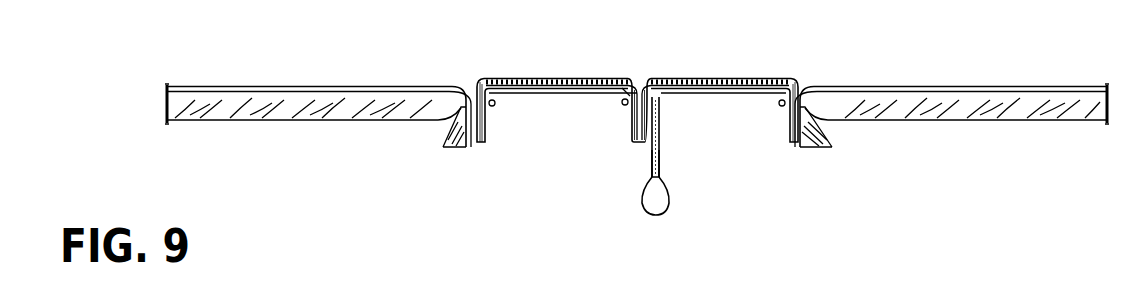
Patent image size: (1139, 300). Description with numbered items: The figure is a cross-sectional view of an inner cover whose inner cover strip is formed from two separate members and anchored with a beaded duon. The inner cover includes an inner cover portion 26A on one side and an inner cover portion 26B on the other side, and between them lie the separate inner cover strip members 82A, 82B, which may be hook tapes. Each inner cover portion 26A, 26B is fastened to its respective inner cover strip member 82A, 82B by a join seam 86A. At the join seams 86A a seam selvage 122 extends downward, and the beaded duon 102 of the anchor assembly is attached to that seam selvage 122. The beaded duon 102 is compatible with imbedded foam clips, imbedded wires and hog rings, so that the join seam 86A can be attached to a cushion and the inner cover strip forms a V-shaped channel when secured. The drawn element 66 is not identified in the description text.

The inner cover portion 26A is at (263, 110).
The inner cover portion 26B is at (970, 100).
The inner cover strip member 82A is at (567, 78).
The inner cover strip member 82B is at (723, 80).
The join seam 86A is at (492, 77).
The seam selvage 122 is at (632, 118).
The clip 66 is at (659, 158).
The beaded duon 102 is at (659, 128).